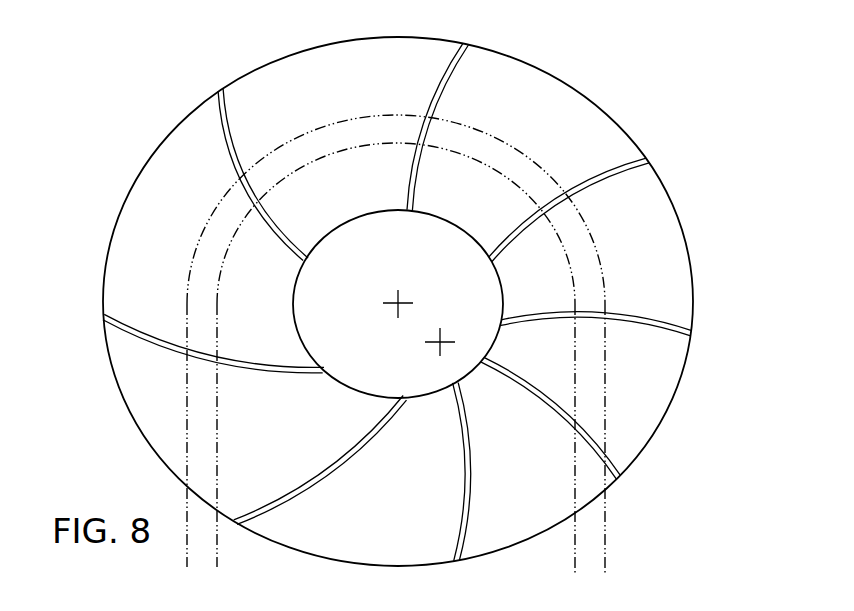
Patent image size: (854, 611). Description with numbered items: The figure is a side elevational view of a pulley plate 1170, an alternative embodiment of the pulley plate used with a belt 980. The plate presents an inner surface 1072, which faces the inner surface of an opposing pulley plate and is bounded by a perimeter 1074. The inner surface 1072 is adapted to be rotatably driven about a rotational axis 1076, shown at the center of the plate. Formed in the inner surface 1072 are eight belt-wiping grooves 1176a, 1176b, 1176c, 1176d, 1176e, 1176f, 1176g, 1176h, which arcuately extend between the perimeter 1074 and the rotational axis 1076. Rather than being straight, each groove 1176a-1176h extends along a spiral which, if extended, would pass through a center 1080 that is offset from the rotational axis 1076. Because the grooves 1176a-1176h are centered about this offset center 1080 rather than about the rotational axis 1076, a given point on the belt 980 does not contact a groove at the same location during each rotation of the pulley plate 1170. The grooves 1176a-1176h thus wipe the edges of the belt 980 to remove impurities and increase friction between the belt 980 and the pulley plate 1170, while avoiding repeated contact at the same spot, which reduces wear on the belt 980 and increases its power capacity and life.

The pulley plate 1170 is at (124, 96).
The inner surface 1072 is at (528, 98).
The perimeter 1074 is at (598, 107).
The rotational axis 1076 is at (393, 302).
The center 1080 is at (440, 342).
The belt 980 is at (607, 545).
The belt-wiping groove 1176a is at (612, 470).
The belt-wiping groove 1176b is at (455, 532).
The belt-wiping groove 1176c is at (272, 538).
The belt-wiping groove 1176d is at (123, 320).
The belt-wiping groove 1176e is at (228, 106).
The belt-wiping groove 1176f is at (450, 67).
The belt-wiping groove 1176g is at (627, 182).
The belt-wiping groove 1176h is at (683, 302).